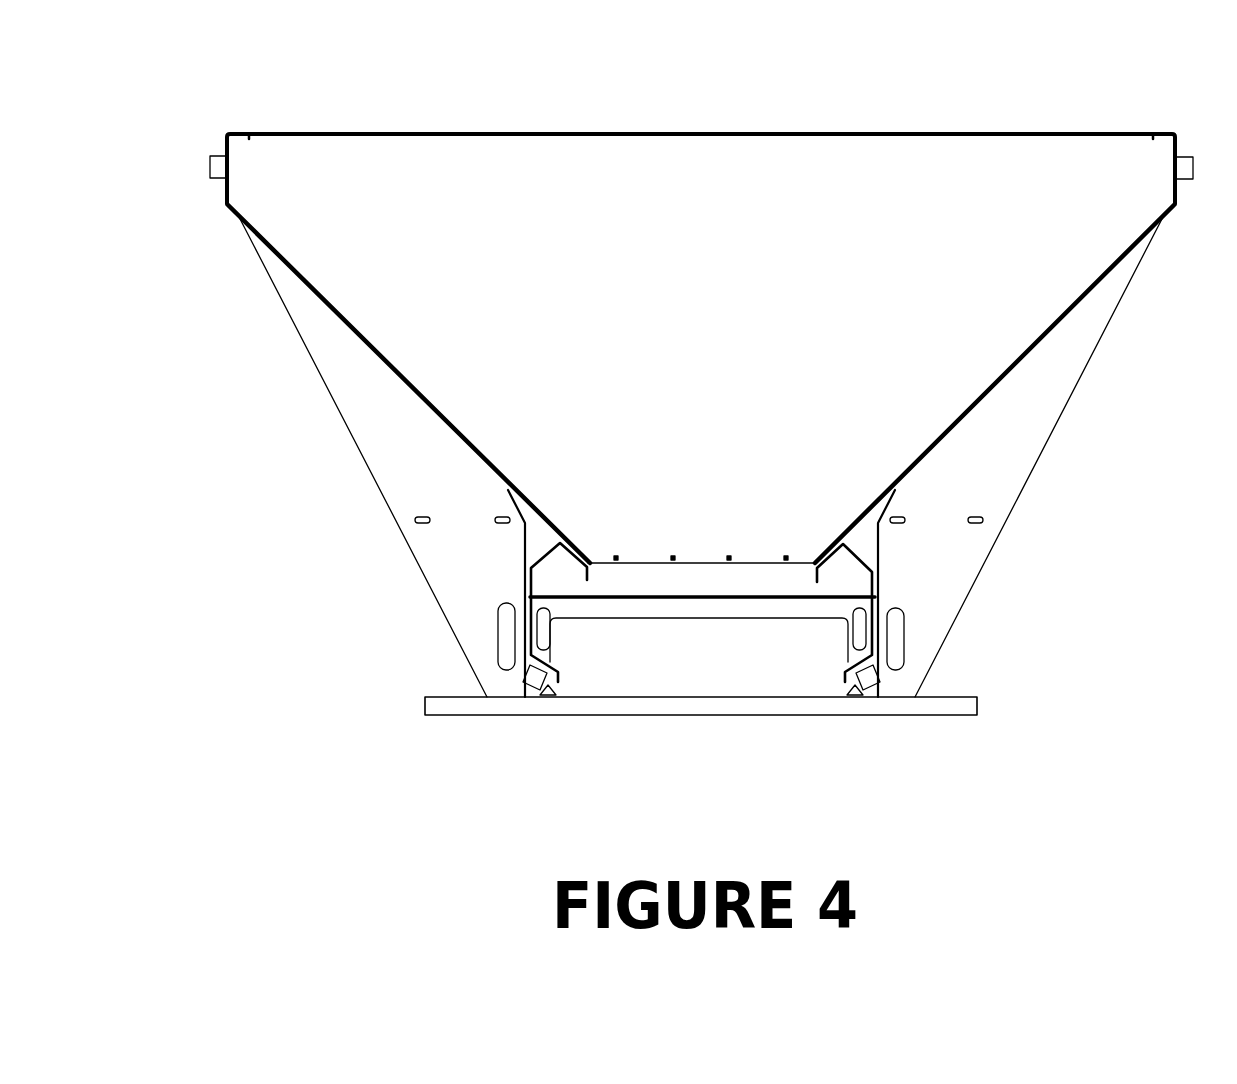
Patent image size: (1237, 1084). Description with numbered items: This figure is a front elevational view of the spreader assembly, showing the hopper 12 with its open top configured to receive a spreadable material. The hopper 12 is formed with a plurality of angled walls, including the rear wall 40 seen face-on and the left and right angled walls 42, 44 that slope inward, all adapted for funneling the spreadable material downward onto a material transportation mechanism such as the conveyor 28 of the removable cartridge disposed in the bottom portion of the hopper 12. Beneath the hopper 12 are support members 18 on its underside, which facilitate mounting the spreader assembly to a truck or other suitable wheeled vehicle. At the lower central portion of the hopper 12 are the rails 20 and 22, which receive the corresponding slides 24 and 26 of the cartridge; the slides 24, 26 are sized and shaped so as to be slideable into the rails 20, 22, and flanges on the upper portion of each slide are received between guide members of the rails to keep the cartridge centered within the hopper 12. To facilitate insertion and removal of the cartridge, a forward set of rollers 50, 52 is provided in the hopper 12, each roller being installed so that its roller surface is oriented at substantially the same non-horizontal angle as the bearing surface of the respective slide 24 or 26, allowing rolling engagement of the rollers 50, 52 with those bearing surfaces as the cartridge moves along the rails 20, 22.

The hopper 12 is at (930, 132).
The support members 18 is at (972, 711).
The rail 20 is at (523, 595).
The rail 22 is at (880, 596).
The slide 24 is at (538, 630).
The slide 26 is at (866, 580).
The conveyor 28 is at (745, 596).
The angled wall 40 is at (700, 451).
The angled wall 42 is at (374, 351).
The angled wall 44 is at (1106, 277).
The roller 50 is at (535, 680).
The roller 52 is at (872, 680).